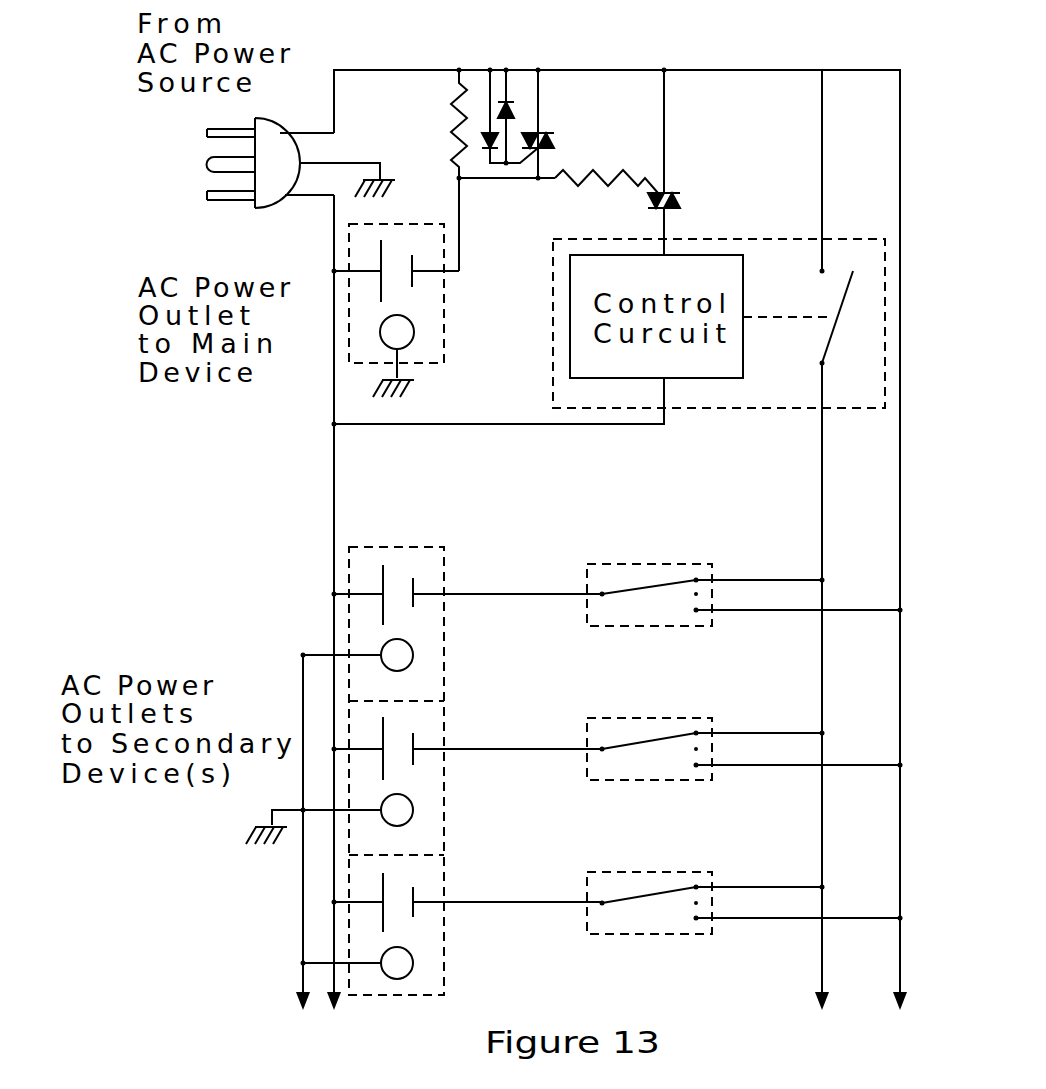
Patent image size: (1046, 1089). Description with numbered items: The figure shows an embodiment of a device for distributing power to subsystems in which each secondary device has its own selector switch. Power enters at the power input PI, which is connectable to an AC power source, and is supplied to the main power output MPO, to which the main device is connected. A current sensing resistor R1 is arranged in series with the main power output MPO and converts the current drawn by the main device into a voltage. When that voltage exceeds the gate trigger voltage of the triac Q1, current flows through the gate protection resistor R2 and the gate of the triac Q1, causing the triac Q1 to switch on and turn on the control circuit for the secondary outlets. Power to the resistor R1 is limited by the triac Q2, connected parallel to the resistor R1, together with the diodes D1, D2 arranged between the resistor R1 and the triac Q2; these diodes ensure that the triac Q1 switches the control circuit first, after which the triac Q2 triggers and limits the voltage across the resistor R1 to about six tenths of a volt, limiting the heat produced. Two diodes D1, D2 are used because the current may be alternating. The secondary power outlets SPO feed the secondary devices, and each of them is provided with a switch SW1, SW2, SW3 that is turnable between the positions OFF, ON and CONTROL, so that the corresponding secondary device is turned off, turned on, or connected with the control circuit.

The power input PI is at (274, 163).
The current sensing resistor R1 is at (436, 170).
The diode D1 is at (503, 94).
The diode D2 is at (525, 94).
The triac Q2 is at (530, 124).
The gate protection resistor R2 is at (606, 198).
The triac Q1 is at (686, 208).
The main power output MPO is at (424, 310).
The secondary power outlets SPO is at (424, 771).
The switch SW1 is at (743, 580).
The switch SW2 is at (743, 734).
The switch SW3 is at (743, 888).